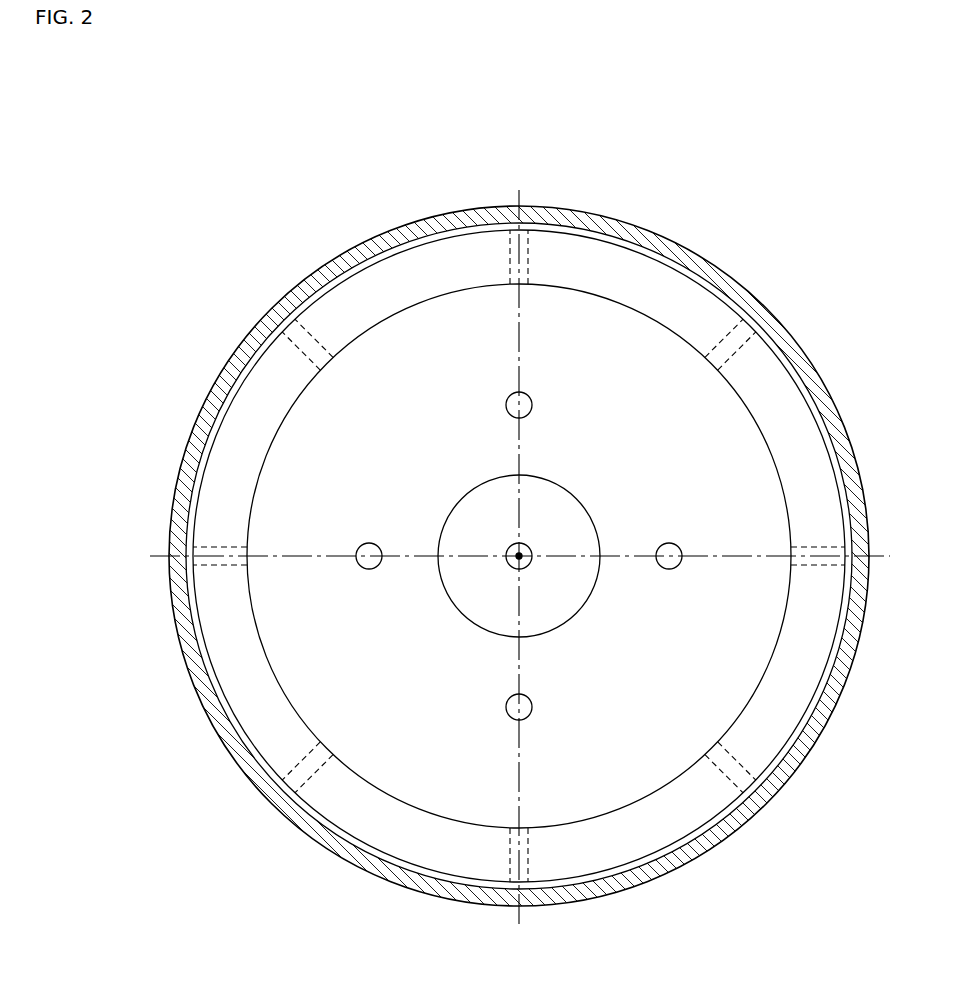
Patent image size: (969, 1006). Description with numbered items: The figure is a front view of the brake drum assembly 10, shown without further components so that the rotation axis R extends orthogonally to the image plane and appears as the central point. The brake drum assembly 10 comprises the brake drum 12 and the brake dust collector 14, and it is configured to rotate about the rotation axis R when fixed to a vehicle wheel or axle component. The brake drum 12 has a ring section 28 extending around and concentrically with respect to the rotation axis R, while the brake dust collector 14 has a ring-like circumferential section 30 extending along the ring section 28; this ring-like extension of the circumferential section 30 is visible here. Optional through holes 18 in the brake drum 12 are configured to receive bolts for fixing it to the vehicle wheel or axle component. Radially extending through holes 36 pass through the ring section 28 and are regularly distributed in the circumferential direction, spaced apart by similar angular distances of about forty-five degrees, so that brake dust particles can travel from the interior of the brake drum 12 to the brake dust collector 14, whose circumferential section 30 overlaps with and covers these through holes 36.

The brake drum assembly 10 is at (597, 168).
The brake drum 12 is at (735, 446).
The brake dust collector 14 is at (483, 208).
The through holes 18 is at (672, 543).
The ring section 28 is at (700, 303).
The circumferential section 30 is at (413, 230).
The through holes 36 is at (828, 565).
The rotation axis R is at (530, 565).